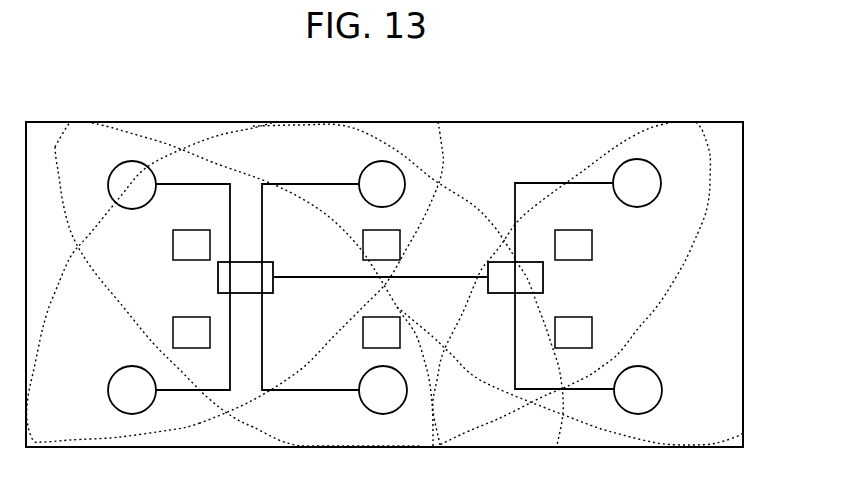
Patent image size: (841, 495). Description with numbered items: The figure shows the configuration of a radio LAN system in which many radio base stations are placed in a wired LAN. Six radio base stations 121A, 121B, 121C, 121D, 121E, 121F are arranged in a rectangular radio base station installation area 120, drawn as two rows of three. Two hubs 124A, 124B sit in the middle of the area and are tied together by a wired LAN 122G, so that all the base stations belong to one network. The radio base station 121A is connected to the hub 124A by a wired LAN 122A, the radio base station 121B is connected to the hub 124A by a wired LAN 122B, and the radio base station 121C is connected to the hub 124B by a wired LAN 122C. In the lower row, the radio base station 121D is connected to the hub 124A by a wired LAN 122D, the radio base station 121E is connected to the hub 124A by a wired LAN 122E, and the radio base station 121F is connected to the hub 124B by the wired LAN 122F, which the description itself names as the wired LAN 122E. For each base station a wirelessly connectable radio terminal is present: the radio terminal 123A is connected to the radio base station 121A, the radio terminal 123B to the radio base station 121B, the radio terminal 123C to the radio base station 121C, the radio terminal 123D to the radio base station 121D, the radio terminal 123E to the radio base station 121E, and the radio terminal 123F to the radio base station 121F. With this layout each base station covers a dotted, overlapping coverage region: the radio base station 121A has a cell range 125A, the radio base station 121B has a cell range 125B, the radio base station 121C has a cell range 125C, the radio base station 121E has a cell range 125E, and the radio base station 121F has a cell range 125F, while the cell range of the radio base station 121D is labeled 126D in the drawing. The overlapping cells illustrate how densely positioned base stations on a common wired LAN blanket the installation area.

The radio base station installation area 120 is at (541, 121).
The radio base station 121A is at (122, 173).
The radio base station 121B is at (362, 175).
The radio base station 121C is at (656, 172).
The radio base station 121D is at (106, 385).
The radio base station 121E is at (383, 403).
The radio base station 121F is at (648, 378).
The wired LAN 122A is at (187, 183).
The wired LAN 122B is at (290, 184).
The wired LAN 122C is at (595, 182).
The wired LAN 122D is at (173, 392).
The wired LAN 122E is at (297, 389).
The cable segment to camera A6 122F is at (514, 367).
The wired LAN 122G is at (413, 276).
The radio terminal 123A is at (191, 233).
The radio terminal 123B is at (381, 233).
The radio terminal 123C is at (575, 233).
The radio terminal 123D is at (191, 321).
The radio terminal 123E is at (361, 345).
The radio terminal 123F is at (575, 320).
The hub 124A is at (215, 277).
The hub 124B is at (545, 277).
The cell range 125A is at (448, 152).
The cell range 125B is at (53, 124).
The cell range 125C is at (332, 128).
The cell range 125E is at (45, 337).
The cell range 125F is at (473, 287).
The imaging range 126D is at (430, 414).